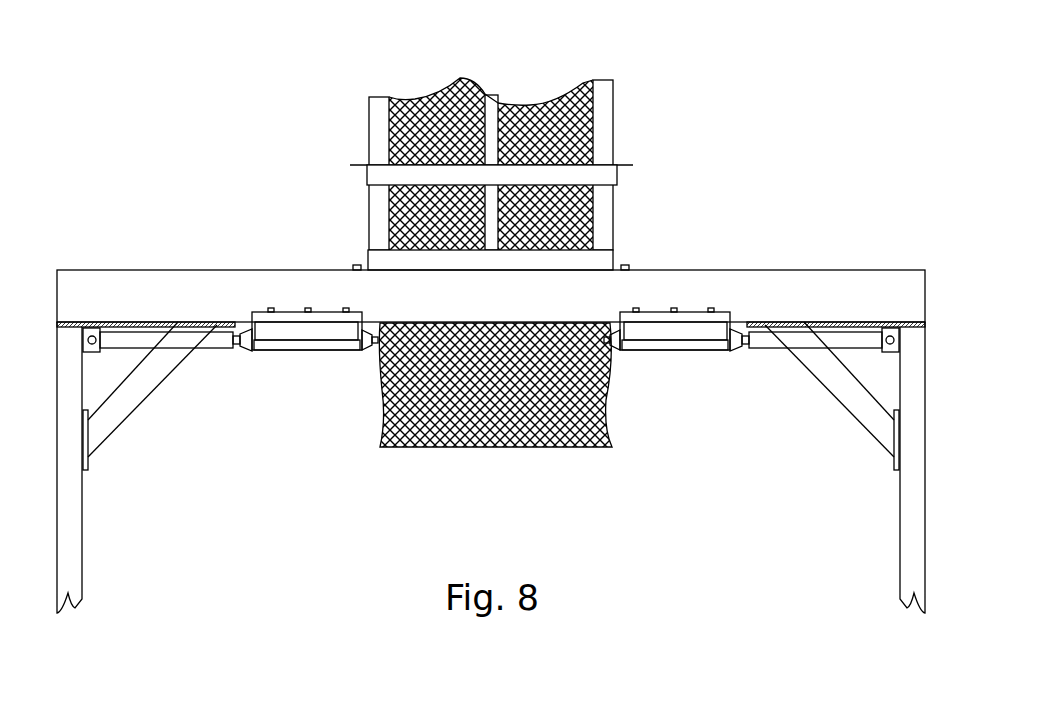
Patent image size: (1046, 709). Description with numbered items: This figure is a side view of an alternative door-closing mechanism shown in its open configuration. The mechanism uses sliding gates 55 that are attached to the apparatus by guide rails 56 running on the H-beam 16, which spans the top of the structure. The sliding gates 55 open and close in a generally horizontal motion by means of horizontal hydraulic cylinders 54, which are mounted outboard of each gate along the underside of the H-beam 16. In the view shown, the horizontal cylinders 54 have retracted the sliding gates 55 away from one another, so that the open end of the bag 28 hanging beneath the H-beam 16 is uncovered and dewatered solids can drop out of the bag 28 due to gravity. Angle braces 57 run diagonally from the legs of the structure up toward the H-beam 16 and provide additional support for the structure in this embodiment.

The H-beam 16 is at (650, 300).
The bag 28 is at (513, 423).
The horizontal hydraulic cylinders 54 is at (153, 338).
The sliding gates 55 is at (260, 347).
The guide rails 56 is at (313, 332).
The angle braces 57 is at (95, 447).